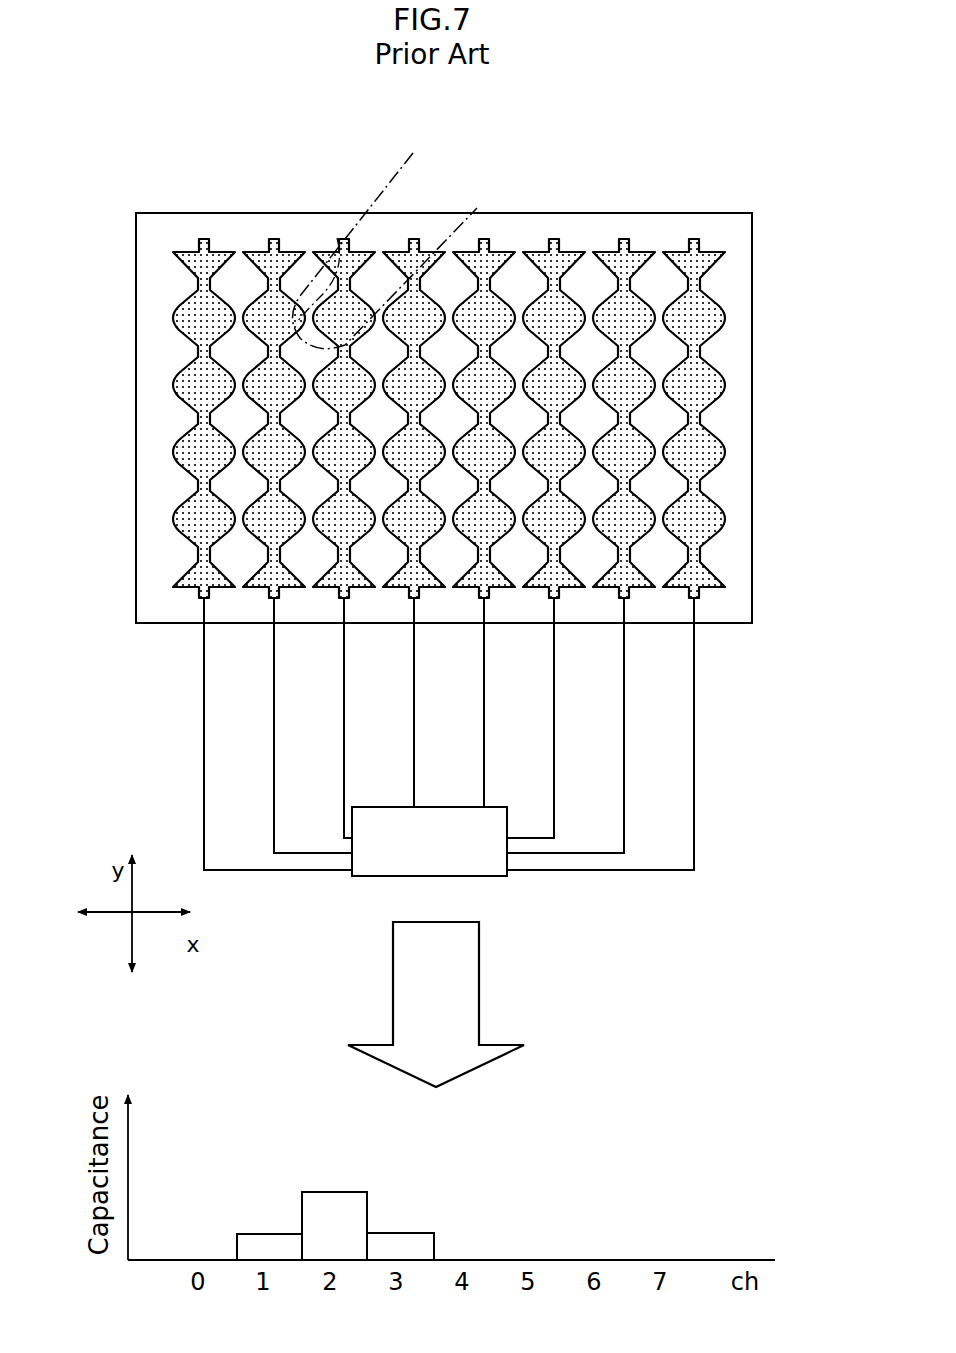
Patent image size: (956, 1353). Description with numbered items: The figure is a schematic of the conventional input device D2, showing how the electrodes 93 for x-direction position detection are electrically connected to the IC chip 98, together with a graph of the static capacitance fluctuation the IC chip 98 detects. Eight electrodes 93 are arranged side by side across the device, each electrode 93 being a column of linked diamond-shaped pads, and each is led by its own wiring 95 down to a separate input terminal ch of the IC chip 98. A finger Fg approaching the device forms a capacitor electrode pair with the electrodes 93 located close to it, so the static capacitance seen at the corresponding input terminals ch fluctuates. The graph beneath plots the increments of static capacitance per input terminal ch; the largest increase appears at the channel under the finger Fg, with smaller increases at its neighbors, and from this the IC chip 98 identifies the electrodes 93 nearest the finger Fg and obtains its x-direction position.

The electrodes for position detection in an x-direction 93 is at (193, 318).
The wirings 95 is at (484, 653).
The IC chip 98 is at (378, 865).
The input device D2 is at (150, 176).
The finger Fg is at (402, 167).
The input terminals for x-direction position detection ch is at (350, 852).